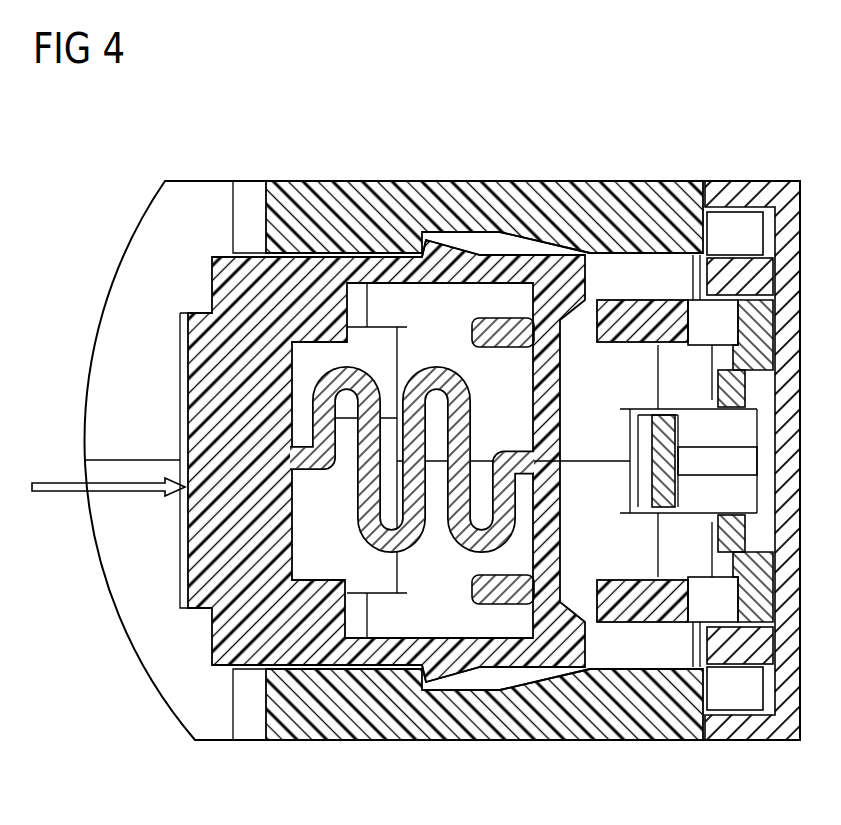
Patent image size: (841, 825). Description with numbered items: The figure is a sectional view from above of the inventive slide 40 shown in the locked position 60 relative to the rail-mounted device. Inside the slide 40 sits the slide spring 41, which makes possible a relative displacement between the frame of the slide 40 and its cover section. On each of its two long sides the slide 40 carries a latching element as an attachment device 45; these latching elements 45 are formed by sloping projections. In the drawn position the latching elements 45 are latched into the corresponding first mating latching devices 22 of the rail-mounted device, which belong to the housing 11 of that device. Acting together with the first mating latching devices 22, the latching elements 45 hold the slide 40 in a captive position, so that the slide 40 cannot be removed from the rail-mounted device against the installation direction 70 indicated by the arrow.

The housing 11 is at (607, 741).
The first mating latching device 22 is at (507, 241).
The slide 40 is at (322, 86).
The slide spring 41 is at (366, 491).
The attachment device 45 is at (430, 246).
The locked position 60 is at (590, 158).
The installation direction 70 is at (65, 490).